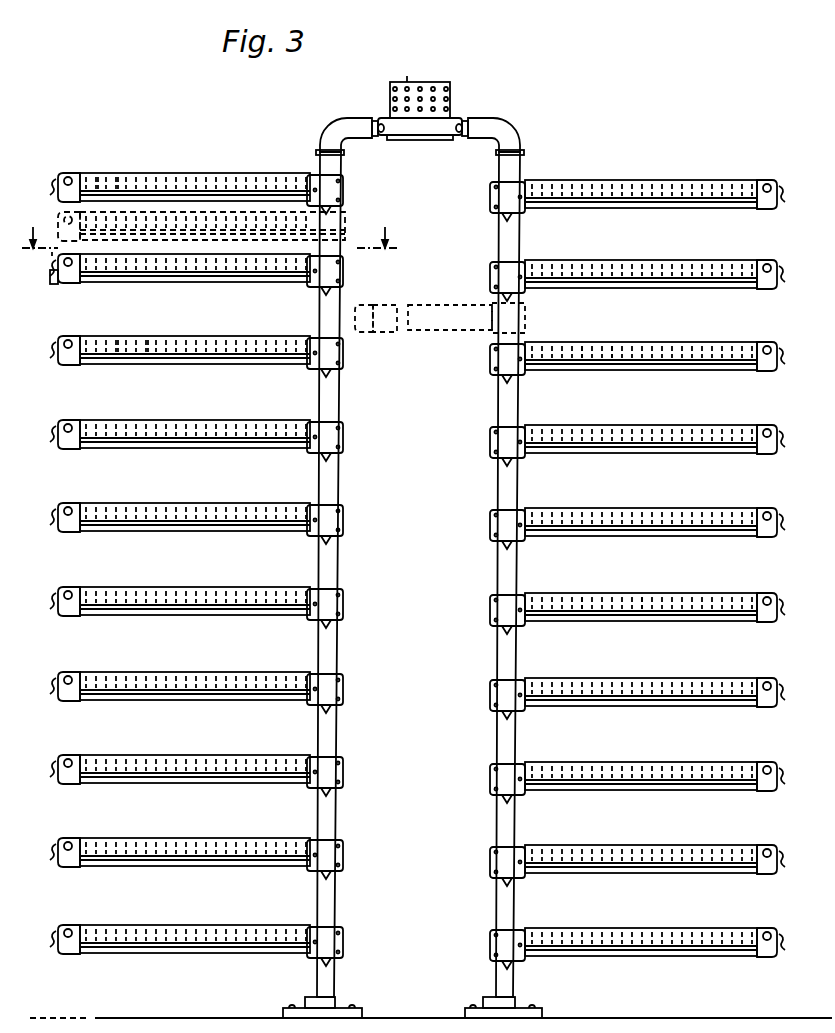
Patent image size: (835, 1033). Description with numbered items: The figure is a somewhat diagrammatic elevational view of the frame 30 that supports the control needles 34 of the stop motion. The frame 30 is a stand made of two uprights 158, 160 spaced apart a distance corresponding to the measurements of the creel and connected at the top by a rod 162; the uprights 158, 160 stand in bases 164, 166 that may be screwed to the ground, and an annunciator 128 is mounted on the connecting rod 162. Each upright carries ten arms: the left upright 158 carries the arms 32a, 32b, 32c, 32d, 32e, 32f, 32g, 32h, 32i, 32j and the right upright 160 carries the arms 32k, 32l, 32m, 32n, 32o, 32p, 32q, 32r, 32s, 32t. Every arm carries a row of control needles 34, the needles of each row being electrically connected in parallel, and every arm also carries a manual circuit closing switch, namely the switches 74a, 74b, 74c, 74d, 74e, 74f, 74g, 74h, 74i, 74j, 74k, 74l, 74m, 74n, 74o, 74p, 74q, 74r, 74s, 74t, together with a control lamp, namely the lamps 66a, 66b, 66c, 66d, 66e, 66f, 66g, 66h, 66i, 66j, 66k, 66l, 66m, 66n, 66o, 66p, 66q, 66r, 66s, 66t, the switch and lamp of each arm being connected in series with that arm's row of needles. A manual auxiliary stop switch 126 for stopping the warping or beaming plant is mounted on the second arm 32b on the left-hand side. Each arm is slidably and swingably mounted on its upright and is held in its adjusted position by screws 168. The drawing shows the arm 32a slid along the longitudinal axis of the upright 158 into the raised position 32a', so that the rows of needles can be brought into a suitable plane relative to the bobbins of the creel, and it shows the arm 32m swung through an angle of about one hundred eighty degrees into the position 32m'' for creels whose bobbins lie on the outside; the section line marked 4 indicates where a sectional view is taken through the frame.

The frame 30 is at (345, 652).
The section line 4- 4 is at (393, 266).
The arm 32a is at (165, 172).
The adjusted position of arm 32a' is at (201, 217).
The arm 32b is at (165, 284).
The arm 32c is at (165, 339).
The arm 32d is at (165, 424).
The arm 32e is at (165, 508).
The arm 32f is at (165, 593).
The arm 32g is at (165, 678).
The arm 32h is at (165, 760).
The arm 32i is at (164, 843).
The arm 32j is at (164, 929).
The arm 32k is at (668, 181).
The arm 32l is at (665, 267).
The arm 32m is at (669, 350).
The swung position of arm 32m'' is at (440, 332).
The arm 32n is at (666, 434).
The arm 32o is at (666, 517).
The arm 32p is at (666, 602).
The arm 32q is at (666, 687).
The arm 32r is at (665, 771).
The arm 32s is at (665, 854).
The arm 32t is at (664, 937).
The control needles 34 is at (120, 180).
The control lamp 66a is at (67, 172).
The control lamp 66b is at (60, 284).
The control lamp 66c is at (58, 337).
The control lamp 66d is at (58, 421).
The control lamp 66e is at (58, 504).
The control lamp 66f is at (57, 588).
The control lamp 66g is at (57, 673).
The control lamp 66h is at (57, 756).
The control lamp 66i is at (57, 839).
The control lamp 66j is at (57, 926).
The control lamp 66k is at (803, 172).
The control lamp 66l is at (798, 250).
The control lamp 66m is at (799, 339).
The control lamp 66n is at (799, 423).
The control lamp 66o is at (799, 505).
The control lamp 66p is at (797, 588).
The control lamp 66q is at (797, 673).
The control lamp 66r is at (794, 757).
The control lamp 66s is at (794, 840).
The control lamp 66t is at (794, 923).
The manual circuit closing switch 74a is at (56, 182).
The manual circuit closing switch 74b is at (54, 263).
The manual circuit closing switch 74c is at (54, 350).
The manual circuit closing switch 74d is at (54, 434).
The manual circuit closing switch 74e is at (54, 517).
The manual circuit closing switch 74f is at (54, 601).
The manual circuit closing switch 74g is at (54, 686).
The manual circuit closing switch 74h is at (54, 769).
The manual circuit closing switch 74i is at (54, 852).
The manual circuit closing switch 74j is at (54, 939).
The manual circuit closing switch 74k is at (781, 194).
The manual circuit closing switch 74l is at (781, 277).
The manual circuit closing switch 74m is at (780, 363).
The manual circuit closing switch 74n is at (780, 446).
The manual circuit closing switch 74o is at (780, 529).
The manual circuit closing switch 74p is at (780, 614).
The manual circuit closing switch 74q is at (780, 699).
The manual circuit closing switch 74r is at (780, 783).
The manual circuit closing switch 74s is at (780, 866).
The manual circuit closing switch 74t is at (780, 949).
The manual auxiliary stop switch 126 is at (54, 285).
The annunciator 128 is at (435, 81).
The upright 158 is at (340, 161).
The upright 160 is at (517, 166).
The rod 162 is at (479, 120).
The base 164 is at (337, 1000).
The base 166 is at (518, 1000).
The screws 168 is at (347, 191).